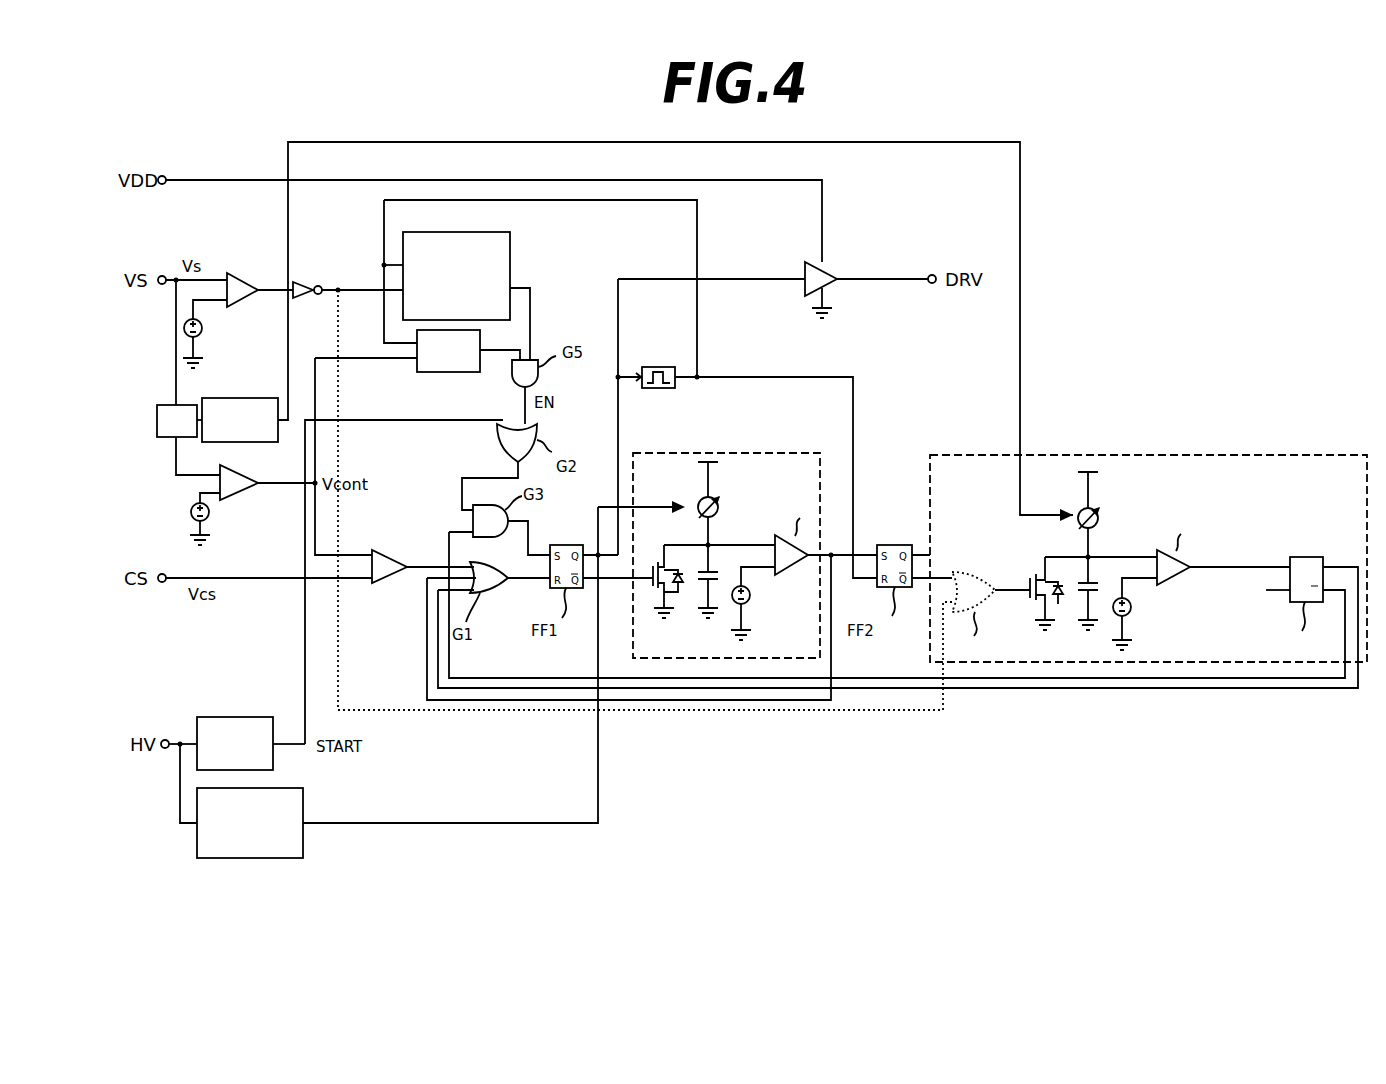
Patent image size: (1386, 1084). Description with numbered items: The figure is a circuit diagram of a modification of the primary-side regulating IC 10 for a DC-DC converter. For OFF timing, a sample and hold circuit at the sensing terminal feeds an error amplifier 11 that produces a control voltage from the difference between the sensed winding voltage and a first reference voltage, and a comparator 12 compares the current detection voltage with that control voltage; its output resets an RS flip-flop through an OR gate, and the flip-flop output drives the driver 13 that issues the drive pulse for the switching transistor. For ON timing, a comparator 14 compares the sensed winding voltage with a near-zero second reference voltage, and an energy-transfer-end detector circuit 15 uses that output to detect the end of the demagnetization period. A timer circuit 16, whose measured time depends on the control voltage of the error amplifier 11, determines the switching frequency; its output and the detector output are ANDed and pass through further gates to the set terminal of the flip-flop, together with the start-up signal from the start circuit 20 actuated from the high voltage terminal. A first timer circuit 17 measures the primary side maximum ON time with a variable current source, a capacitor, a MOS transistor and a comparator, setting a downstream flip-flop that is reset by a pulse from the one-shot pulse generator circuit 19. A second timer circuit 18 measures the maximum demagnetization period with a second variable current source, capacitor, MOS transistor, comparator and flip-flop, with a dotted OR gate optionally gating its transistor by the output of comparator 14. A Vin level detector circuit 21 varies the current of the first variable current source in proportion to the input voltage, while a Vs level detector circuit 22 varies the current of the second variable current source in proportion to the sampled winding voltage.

The primary-side regulating IC 10 is at (1097, 185).
The error amplifier 11 is at (250, 470).
The comparator 12 is at (375, 584).
The driver 13 is at (830, 268).
The comparator 14 is at (245, 272).
The energy-transfer-end detector circuit 15 is at (510, 240).
The timer circuit 16 is at (419, 373).
The first timer circuit 17 is at (765, 452).
The second timer circuit 18 is at (1090, 455).
The one-shot pulse generator circuit 19 is at (657, 367).
The start circuit 20 is at (225, 717).
The Vin level detector circuit 21 is at (233, 858).
The Vs level detector circuit 22 is at (243, 398).